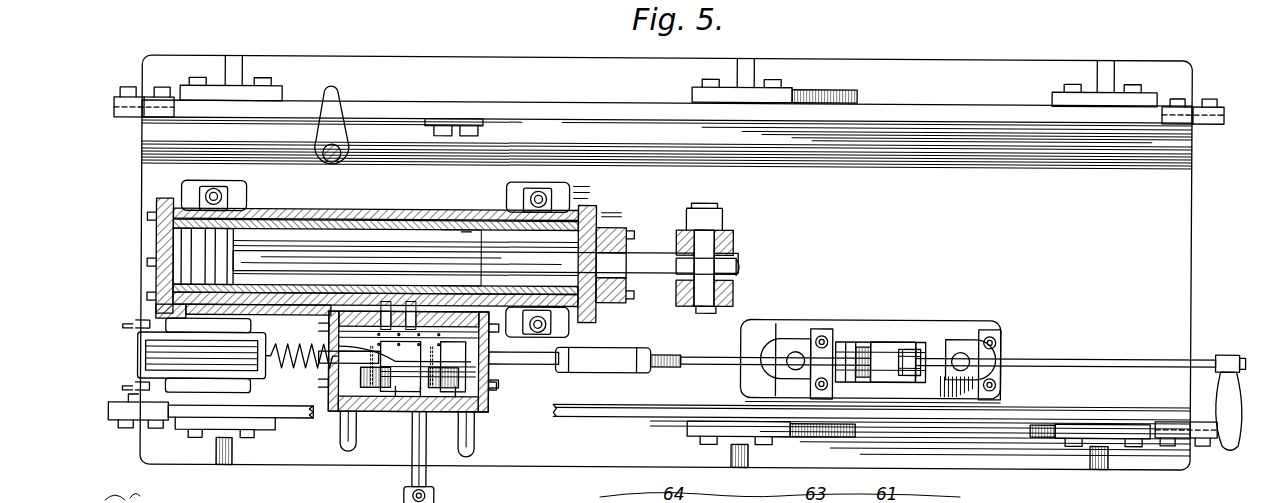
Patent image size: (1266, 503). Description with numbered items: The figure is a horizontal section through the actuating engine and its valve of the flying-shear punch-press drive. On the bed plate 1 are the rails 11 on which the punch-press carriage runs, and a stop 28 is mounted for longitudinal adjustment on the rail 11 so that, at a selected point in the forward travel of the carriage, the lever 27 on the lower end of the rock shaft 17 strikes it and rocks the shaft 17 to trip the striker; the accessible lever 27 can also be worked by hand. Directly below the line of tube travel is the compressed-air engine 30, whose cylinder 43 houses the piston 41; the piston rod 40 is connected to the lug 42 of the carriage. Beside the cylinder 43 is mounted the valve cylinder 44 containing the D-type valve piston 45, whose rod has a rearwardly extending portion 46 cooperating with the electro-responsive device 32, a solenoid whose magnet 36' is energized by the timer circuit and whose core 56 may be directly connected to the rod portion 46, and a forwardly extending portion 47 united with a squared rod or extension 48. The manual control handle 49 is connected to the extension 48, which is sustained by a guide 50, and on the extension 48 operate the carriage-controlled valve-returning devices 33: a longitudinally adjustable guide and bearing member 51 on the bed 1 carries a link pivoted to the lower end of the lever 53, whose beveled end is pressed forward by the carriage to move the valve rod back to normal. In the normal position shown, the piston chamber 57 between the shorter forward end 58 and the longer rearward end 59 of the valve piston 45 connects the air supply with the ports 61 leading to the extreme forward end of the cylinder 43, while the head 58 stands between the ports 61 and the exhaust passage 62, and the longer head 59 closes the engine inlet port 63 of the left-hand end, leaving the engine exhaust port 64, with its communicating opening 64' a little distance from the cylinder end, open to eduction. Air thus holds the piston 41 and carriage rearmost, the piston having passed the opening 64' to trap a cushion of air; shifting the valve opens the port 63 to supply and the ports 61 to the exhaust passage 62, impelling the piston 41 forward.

The bed plate 1 is at (868, 58).
The rails 11 is at (977, 102).
The rock shaft 17 is at (345, 150).
The lever 27 is at (335, 130).
The stop 28 is at (442, 117).
The engine 30 is at (420, 215).
The electro-responsive device 32 is at (132, 353).
The carriage-operated valve-restoring mechanism 33 is at (912, 338).
The magnet 36' is at (210, 426).
The piston rod 40 is at (633, 262).
The piston 41 is at (369, 259).
The lug 42 is at (735, 238).
The cylinder 43 is at (435, 275).
The valve cylinder 44 is at (412, 407).
The valve piston 45 is at (400, 410).
The rearwardly extending portion of piston rod 46 is at (338, 395).
The forwardly extending portion of piston rod 47 is at (538, 358).
The squared rod or extension 48 is at (712, 346).
The manual control handle 49 is at (1236, 430).
The guide 50 is at (1000, 340).
The guide and bearing member 51 is at (820, 325).
The lever 53 is at (925, 355).
The core 56 is at (295, 372).
The piston chamber 57 is at (430, 410).
The shorter forward end 58 is at (490, 388).
The longer rearward end 59 is at (390, 405).
The ports 61 is at (470, 245).
The exhaust passage 62 is at (472, 420).
The engine inlet port 63 is at (410, 300).
The engine exhaust port 64 is at (376, 259).
The communicating opening 64' is at (217, 317).